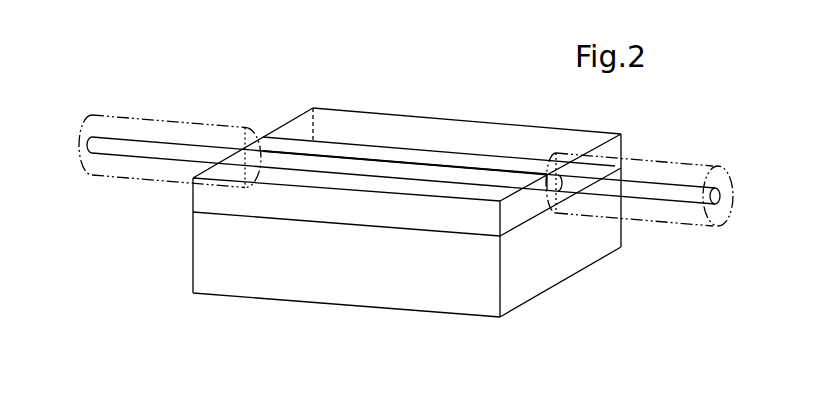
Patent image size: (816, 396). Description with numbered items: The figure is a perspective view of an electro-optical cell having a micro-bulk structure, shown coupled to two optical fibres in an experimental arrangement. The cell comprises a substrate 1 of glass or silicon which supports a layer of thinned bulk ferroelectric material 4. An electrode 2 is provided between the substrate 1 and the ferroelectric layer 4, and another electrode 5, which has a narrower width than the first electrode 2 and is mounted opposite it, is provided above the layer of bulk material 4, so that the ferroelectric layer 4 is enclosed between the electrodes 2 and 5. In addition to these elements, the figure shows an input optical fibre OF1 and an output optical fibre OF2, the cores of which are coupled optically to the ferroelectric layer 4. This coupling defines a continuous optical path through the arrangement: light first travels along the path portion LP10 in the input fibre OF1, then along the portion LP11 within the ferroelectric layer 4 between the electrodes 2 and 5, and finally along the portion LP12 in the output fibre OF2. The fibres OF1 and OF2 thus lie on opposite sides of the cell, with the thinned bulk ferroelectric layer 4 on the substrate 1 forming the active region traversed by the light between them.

The substrate 1 is at (389, 287).
The electrode 2 is at (242, 218).
The layer of thinned bulk ferroelectric material 4 is at (490, 122).
The electrode 5 is at (360, 148).
The input optical fibre OF1 is at (680, 163).
The output optical fibre OF2 is at (158, 120).
The optical path LP10 is at (662, 197).
The optical path LP11 is at (357, 168).
The optical path LP12 is at (128, 149).